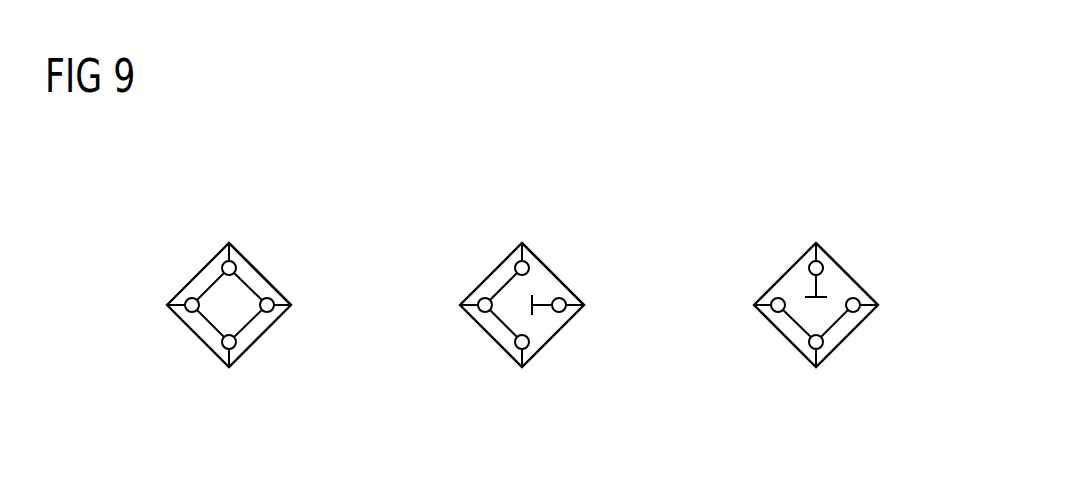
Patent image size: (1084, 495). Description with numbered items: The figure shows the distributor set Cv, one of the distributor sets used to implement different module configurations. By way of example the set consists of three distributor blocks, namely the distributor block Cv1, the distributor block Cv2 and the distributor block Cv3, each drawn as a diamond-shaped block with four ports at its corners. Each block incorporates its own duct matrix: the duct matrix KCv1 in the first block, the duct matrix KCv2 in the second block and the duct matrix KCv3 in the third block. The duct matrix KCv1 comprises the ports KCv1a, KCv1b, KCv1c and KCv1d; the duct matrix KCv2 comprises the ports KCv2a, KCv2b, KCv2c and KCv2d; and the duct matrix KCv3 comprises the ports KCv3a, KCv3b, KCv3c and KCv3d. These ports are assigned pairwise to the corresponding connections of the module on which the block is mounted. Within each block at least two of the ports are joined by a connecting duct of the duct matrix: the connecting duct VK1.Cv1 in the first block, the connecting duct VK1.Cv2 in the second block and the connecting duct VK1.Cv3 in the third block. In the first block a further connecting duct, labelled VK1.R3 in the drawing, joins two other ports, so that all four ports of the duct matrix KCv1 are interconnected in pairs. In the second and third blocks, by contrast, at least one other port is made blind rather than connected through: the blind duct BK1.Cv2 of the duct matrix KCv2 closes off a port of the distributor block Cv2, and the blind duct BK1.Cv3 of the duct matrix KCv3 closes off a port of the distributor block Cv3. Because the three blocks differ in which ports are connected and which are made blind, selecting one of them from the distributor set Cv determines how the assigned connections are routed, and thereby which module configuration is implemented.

The distributor set Cv is at (399, 148).
The duct matrix KCv1 is at (186, 325).
The port KCv1a is at (229, 243).
The port KCv1b is at (167, 305).
The port KCv1c is at (229, 367).
The port KCv1d is at (270, 284).
The distributor block Cv1 is at (291, 305).
The connecting duct VK1.Cv1 is at (210, 283).
The connecting duct VK1.R3 is at (248, 328).
The duct matrix KCv2 is at (479, 325).
The port KCv2a is at (522, 243).
The port KCv2b is at (460, 305).
The port KCv2c is at (522, 367).
The port KCv2d is at (563, 284).
The distributor block Cv2 is at (584, 305).
The connecting duct VK1.Cv2 is at (503, 283).
The blind duct BK1.Cv2 is at (546, 312).
The duct matrix KCv3 is at (773, 325).
The port KCv3a is at (816, 243).
The port KCv3b is at (754, 305).
The port KCv3c is at (816, 367).
The port KCv3d is at (857, 284).
The distributor block Cv3 is at (878, 305).
The connecting duct VK1.Cv3 is at (835, 328).
The blind duct BK1.Cv3 is at (813, 292).